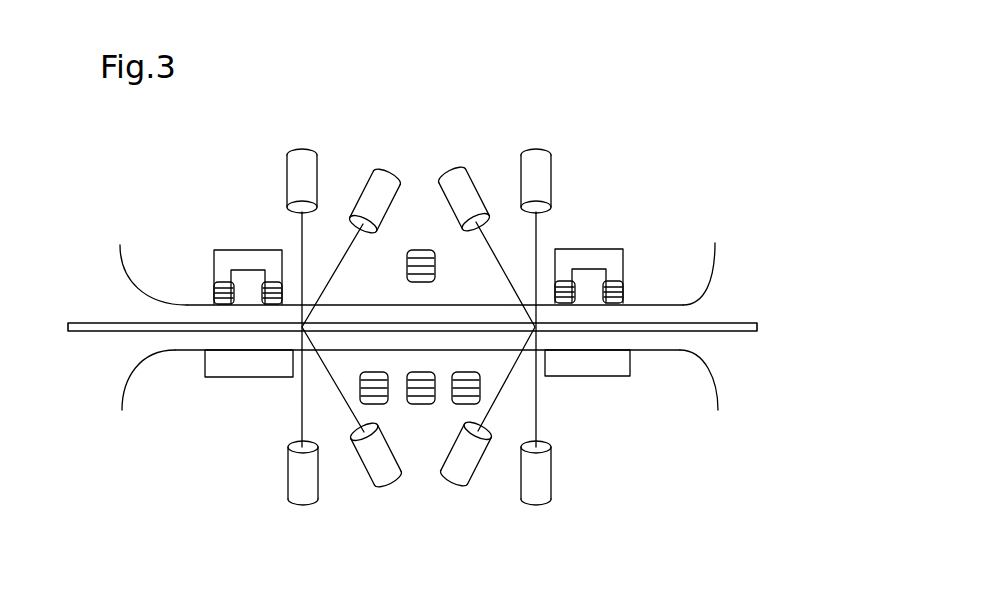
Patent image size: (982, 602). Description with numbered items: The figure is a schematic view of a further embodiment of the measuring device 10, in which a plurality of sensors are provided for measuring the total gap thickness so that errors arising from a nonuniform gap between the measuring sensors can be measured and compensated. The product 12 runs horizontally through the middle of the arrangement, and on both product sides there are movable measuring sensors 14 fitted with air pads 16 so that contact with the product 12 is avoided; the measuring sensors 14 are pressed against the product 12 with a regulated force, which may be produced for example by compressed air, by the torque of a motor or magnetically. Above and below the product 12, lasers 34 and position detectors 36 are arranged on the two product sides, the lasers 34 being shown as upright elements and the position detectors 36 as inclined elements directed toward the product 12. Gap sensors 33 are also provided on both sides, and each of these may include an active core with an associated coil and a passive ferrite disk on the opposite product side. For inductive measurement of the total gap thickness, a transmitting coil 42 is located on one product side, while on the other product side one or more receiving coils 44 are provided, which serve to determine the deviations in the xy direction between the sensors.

The measuring device 10 is at (587, 95).
The product 12 is at (765, 326).
The measuring sensors 14 is at (117, 268).
The air pads 16 is at (690, 343).
The gap sensors 33 is at (600, 243).
The lasers 34 is at (302, 140).
The position detectors 36 is at (381, 155).
The transmitting coil 42 is at (421, 250).
The receiving coils 44 is at (422, 421).